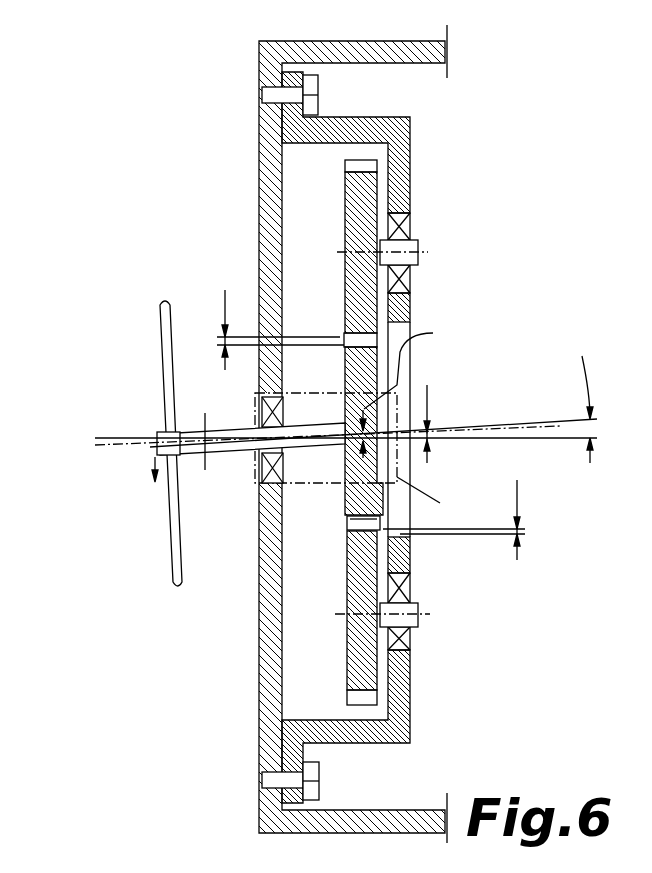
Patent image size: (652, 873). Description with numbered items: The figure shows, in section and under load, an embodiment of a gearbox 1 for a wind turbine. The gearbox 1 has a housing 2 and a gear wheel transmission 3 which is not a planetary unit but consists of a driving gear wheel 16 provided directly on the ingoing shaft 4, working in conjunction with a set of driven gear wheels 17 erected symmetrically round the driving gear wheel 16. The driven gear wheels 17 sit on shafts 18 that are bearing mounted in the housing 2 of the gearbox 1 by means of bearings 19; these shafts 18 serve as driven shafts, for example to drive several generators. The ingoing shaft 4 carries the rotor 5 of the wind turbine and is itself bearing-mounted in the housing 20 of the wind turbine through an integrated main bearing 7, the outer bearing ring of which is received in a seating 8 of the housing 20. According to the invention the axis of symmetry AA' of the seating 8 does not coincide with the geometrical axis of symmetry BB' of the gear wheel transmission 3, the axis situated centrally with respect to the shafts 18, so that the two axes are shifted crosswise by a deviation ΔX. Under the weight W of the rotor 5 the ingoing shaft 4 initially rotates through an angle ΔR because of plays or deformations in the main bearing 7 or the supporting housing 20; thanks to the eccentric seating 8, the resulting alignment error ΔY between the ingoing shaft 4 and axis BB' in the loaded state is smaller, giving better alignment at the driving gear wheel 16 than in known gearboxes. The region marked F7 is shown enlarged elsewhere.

The gearbox 1 is at (490, 114).
The housing 2 is at (404, 184).
The gear wheel transmission 3 is at (299, 664).
The ingoing shaft 4 is at (227, 456).
The rotor 5 is at (170, 550).
The main bearing 7 is at (256, 473).
The seating 8 is at (261, 384).
The driving gear wheel 16 is at (351, 511).
The driven gear wheels 17 is at (367, 190).
The shafts 18 is at (413, 258).
The bearings 19 is at (410, 228).
The housing of the wind turbine 20 is at (268, 170).